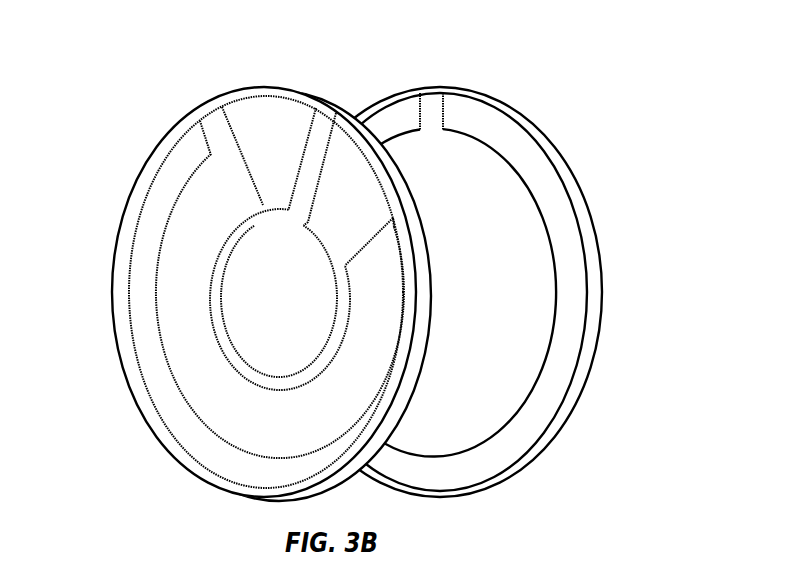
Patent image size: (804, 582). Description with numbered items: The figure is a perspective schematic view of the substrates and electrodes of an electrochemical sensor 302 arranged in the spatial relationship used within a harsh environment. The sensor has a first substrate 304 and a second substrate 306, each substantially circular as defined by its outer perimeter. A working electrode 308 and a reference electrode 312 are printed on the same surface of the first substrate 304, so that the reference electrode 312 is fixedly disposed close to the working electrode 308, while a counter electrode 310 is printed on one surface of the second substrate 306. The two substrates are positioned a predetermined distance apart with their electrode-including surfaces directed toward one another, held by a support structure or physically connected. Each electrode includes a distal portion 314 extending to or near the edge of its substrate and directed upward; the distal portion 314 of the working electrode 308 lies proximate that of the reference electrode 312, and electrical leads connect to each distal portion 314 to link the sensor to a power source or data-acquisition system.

The electrochemical sensor 302 is at (381, 266).
The first substrate 304 is at (137, 192).
The second substrate 306 is at (548, 182).
The working electrode 308 is at (292, 306).
The counter electrode 310 is at (498, 300).
The reference electrode 312 is at (293, 434).
The distal portion 314 is at (200, 87).